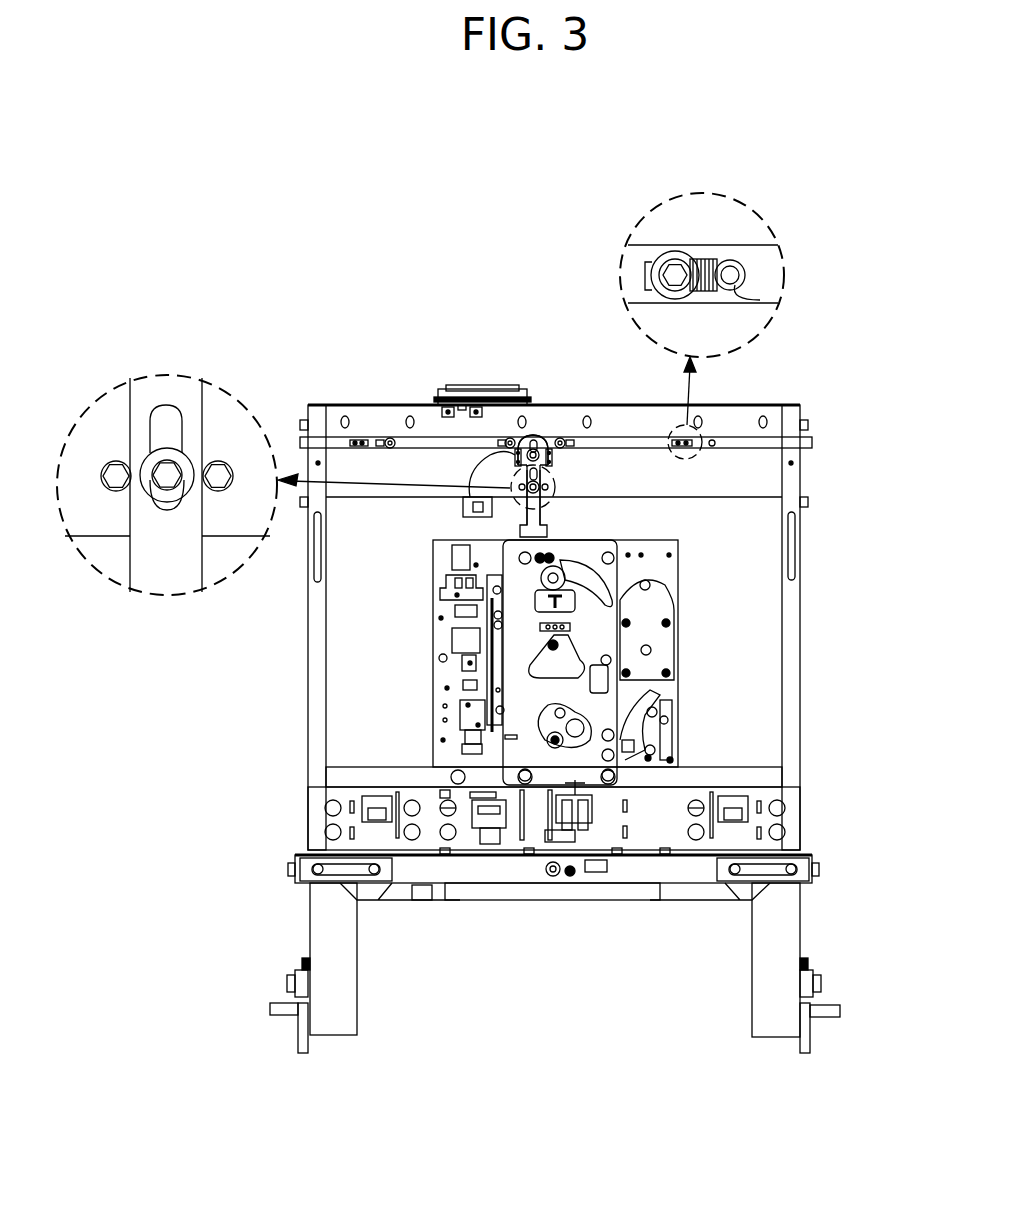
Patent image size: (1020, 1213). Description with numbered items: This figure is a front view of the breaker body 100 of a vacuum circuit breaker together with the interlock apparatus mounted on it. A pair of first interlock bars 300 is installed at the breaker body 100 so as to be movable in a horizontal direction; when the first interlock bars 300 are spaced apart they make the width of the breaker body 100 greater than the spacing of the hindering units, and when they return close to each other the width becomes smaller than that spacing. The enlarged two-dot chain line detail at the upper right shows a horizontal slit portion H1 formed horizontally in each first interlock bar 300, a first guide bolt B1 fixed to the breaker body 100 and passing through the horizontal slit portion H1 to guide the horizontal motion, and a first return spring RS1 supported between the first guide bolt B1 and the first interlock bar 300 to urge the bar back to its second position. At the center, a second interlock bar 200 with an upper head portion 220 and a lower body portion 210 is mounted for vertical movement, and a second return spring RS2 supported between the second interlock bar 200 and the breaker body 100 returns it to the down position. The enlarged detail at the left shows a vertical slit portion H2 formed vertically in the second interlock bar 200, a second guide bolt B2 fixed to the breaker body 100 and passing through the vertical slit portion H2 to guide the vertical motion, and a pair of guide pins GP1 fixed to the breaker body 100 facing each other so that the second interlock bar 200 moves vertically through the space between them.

The breaker body 100 is at (511, 340).
The second interlock bar 200 is at (632, 318).
The lower body portion 210 is at (543, 520).
The upper head portion 220 is at (546, 440).
The first interlock bar 300 is at (422, 445).
The second return spring RS2 is at (520, 462).
The first return spring RS1 is at (705, 262).
The first guide bolt B1 is at (672, 268).
The second guide bolt B2 is at (178, 495).
The horizontal slit portion H1 is at (760, 300).
The vertical slit portion H2 is at (160, 418).
The guide pin GP1 is at (220, 468).